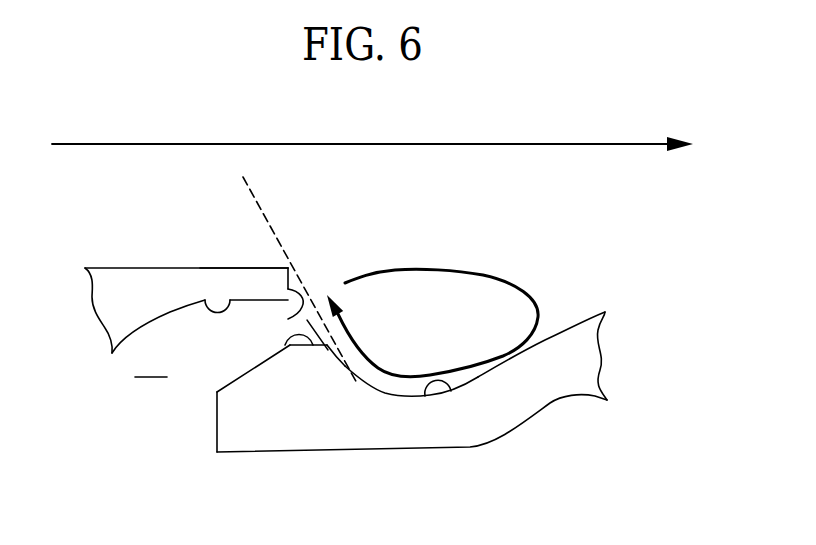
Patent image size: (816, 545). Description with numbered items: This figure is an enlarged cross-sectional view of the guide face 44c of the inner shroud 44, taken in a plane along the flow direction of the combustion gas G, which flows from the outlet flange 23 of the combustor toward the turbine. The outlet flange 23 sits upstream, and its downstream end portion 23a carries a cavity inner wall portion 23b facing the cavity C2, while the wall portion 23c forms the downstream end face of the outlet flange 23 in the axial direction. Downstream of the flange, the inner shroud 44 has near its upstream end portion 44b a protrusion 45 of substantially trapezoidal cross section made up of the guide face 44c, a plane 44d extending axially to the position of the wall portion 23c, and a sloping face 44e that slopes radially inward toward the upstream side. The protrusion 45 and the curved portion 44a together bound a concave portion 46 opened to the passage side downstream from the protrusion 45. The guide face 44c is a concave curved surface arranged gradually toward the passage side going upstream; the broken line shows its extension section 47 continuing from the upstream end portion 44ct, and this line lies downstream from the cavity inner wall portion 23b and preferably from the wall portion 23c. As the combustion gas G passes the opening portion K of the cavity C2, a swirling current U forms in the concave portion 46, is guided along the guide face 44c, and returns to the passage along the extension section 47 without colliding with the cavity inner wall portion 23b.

The combustion gas G is at (362, 142).
The outlet flange 23 is at (130, 280).
The downstream end portion 23a is at (243, 278).
The cavity inner wall portion 23b is at (208, 301).
The wall portion 23c is at (288, 319).
The cavity C2 is at (151, 362).
The inner shroud 44 is at (597, 313).
The curved portion 44a is at (565, 335).
The upstream end portion 44b is at (228, 425).
The guide face 44c is at (363, 372).
The upstream end portion of the guide face 44ct is at (333, 345).
The plane 44d is at (287, 345).
The sloping face 44e is at (247, 375).
The protrusion 45 is at (317, 355).
The concave portion 46 is at (425, 396).
The extension section 47 is at (260, 208).
The opening portion K is at (328, 350).
The swirling current U is at (498, 277).